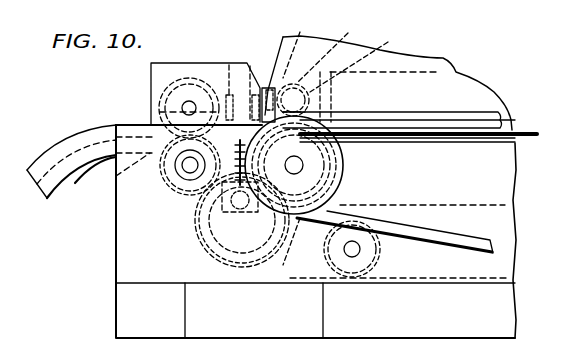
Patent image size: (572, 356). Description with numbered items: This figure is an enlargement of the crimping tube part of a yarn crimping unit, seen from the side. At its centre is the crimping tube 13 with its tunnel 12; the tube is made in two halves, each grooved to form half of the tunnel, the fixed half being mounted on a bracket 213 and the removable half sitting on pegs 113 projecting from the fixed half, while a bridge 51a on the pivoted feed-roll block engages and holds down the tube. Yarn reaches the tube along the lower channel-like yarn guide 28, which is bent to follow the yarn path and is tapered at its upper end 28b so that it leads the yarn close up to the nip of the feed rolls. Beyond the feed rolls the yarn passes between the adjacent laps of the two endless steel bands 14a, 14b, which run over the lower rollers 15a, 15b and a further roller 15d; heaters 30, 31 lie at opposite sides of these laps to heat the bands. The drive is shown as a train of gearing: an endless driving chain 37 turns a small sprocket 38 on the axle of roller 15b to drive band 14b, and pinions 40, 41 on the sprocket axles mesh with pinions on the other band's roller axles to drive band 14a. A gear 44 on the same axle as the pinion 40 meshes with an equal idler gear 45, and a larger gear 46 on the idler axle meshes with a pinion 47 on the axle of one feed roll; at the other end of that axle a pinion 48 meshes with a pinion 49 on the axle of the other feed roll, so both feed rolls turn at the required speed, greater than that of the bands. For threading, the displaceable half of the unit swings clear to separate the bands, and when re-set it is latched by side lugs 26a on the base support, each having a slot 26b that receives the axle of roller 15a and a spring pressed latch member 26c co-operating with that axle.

The tunnel 12 is at (192, 206).
The crimping tube 13 is at (212, 110).
The pegs 113 is at (229, 65).
The endless band 14a is at (508, 128).
The endless band 14b is at (516, 139).
The roller 15a is at (378, 97).
The roller 15b is at (297, 270).
The roller 15d is at (348, 280).
The side lugs 26a is at (366, 59).
The slot 26b is at (340, 49).
The spring pressed latch member 26c is at (308, 46).
The lower yarn guide 28 is at (44, 161).
The tapered upper end 28b is at (94, 179).
The heater 30 is at (446, 60).
The heater 31 is at (441, 205).
The endless driving chain 37 is at (437, 240).
The small sprocket 38 is at (341, 184).
The pinion 40 is at (334, 168).
The pinion 41 is at (320, 110).
The gear 44 is at (335, 154).
The idler gear 45 is at (241, 268).
The larger gear 46 is at (220, 259).
The pinion 47 is at (180, 196).
The pinion 48 is at (163, 183).
The pinion 49 is at (160, 103).
The bridge 51a is at (260, 86).
The bracket 213 is at (219, 224).